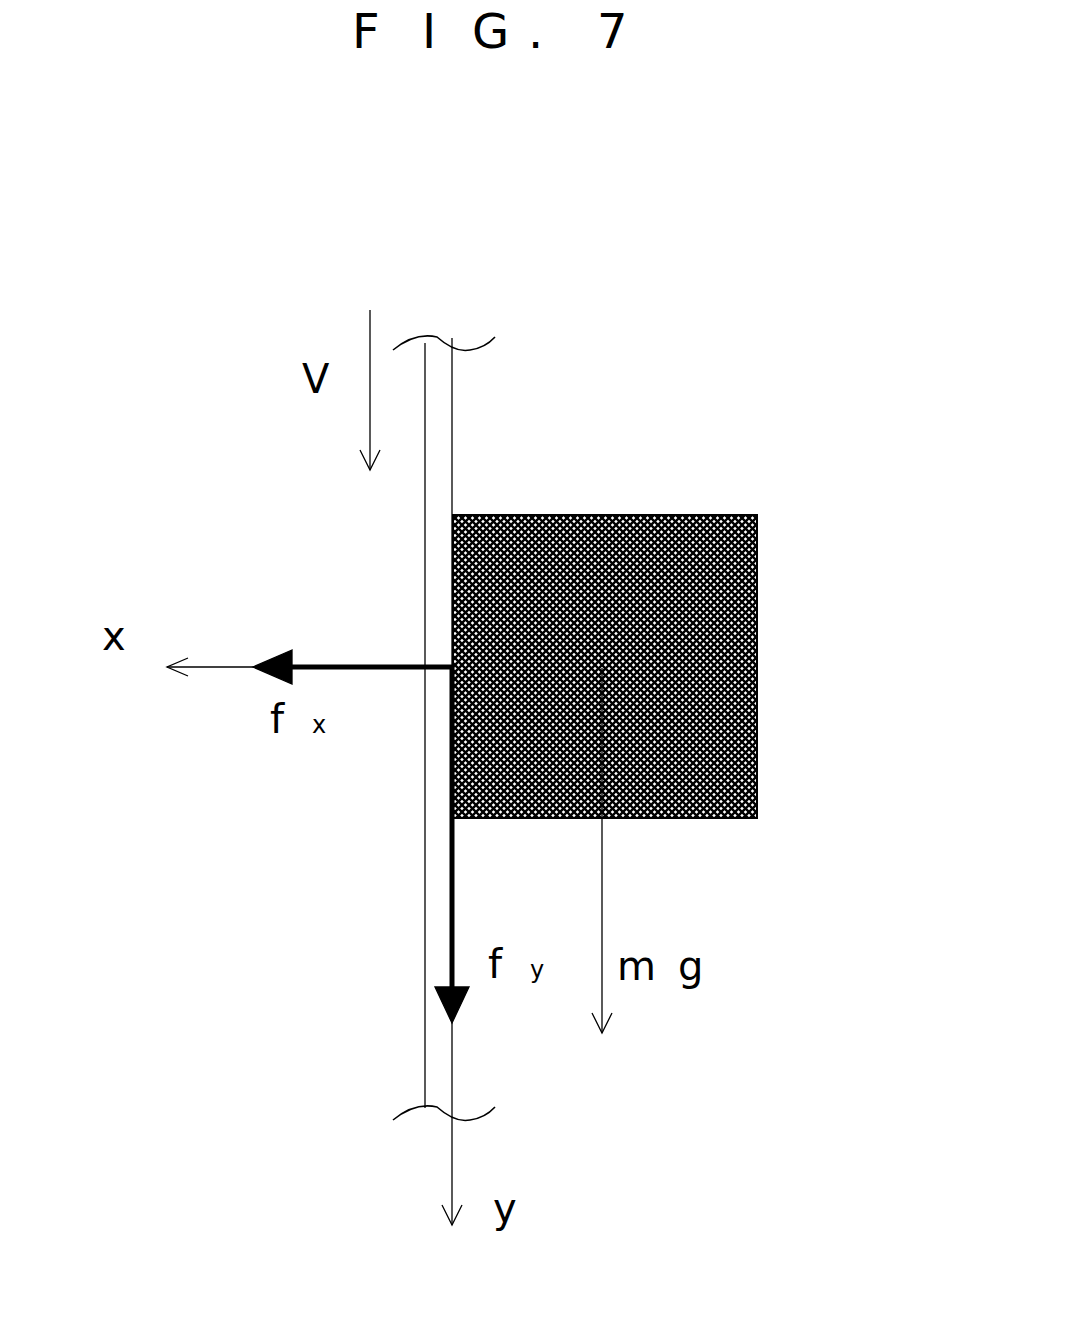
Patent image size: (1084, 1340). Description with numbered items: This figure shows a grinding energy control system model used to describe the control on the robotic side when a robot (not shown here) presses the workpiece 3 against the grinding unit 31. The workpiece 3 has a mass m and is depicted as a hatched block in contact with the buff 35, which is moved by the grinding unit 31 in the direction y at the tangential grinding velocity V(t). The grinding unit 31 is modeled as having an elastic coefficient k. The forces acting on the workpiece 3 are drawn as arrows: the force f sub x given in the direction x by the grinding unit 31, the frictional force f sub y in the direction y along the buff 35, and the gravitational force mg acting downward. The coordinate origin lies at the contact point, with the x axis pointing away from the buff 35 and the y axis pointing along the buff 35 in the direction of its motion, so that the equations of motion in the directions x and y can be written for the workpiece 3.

The grinding unit 31 is at (610, 287).
The buff 35 is at (452, 438).
The workpiece 3 is at (757, 603).